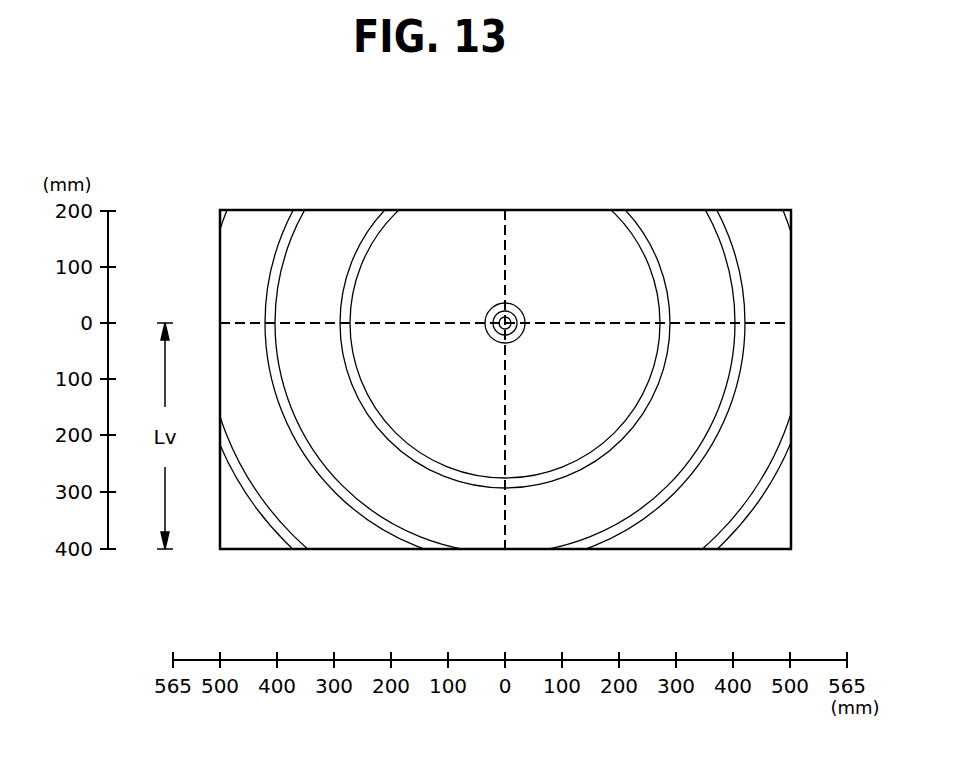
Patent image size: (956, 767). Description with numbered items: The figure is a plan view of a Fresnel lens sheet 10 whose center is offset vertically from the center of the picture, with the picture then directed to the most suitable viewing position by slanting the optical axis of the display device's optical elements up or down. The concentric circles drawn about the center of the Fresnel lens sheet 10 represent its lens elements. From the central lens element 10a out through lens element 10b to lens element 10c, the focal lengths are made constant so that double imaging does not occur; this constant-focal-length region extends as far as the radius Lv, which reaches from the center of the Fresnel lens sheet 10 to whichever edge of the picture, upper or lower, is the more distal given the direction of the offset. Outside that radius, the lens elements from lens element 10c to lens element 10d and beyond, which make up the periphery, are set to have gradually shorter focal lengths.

The Fresnel lens sheet 10 is at (792, 348).
The lens element 10a is at (497, 307).
The lens element 10b is at (637, 228).
The lens element 10c is at (727, 228).
The lens element 10d is at (750, 503).